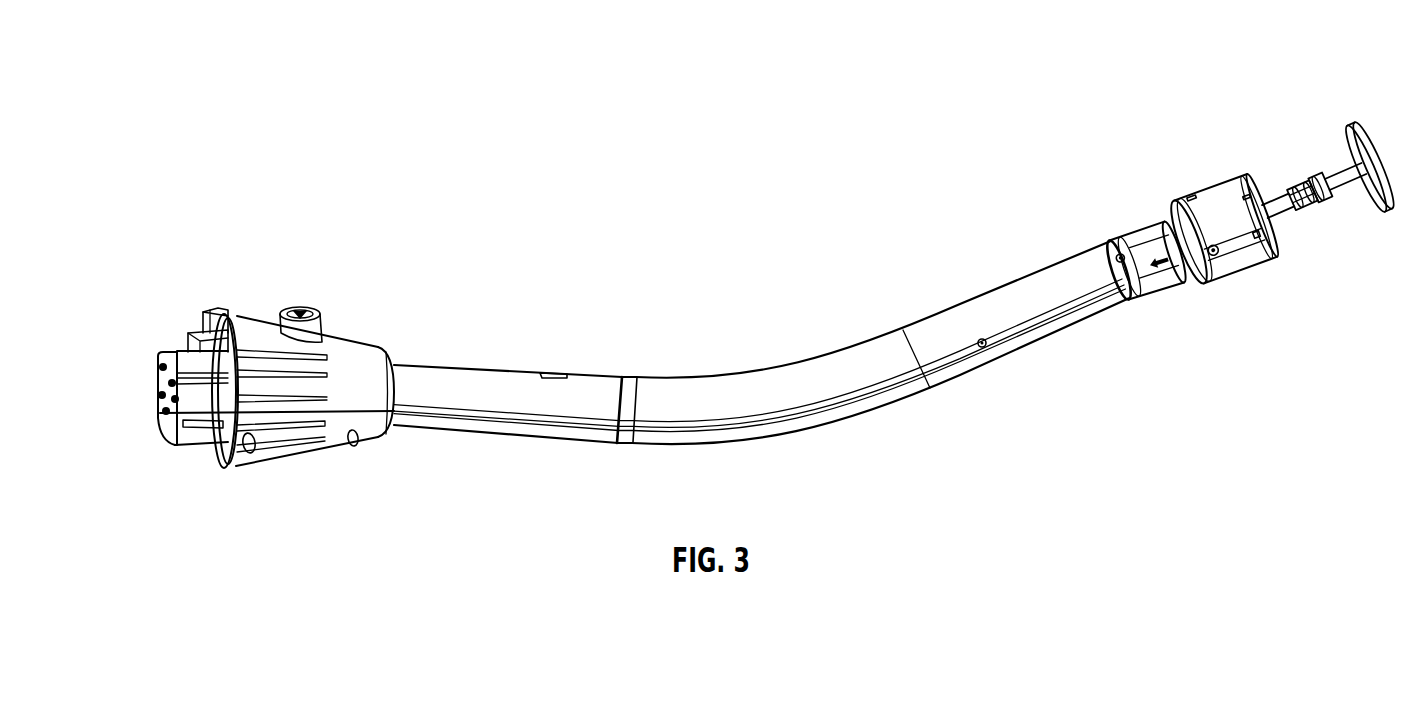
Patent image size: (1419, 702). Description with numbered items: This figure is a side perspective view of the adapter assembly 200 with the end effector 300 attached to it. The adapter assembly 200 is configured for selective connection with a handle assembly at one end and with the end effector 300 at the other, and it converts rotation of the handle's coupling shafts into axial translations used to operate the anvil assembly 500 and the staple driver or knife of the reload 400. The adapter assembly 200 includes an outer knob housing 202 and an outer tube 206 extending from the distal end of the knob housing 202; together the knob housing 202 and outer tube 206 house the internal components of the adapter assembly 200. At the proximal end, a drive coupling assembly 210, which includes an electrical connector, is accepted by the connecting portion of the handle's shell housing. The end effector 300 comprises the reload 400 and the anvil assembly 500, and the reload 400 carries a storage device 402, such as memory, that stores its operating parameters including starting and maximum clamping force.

The adapter assembly 200 is at (707, 357).
The outer knob housing 202 is at (362, 343).
The outer tube 206 is at (873, 341).
The drive coupling assembly 210 is at (172, 331).
The end effector 300 is at (1254, 170).
The reload 400 is at (1227, 188).
The storage device 402 is at (1140, 228).
The anvil assembly 500 is at (1367, 140).